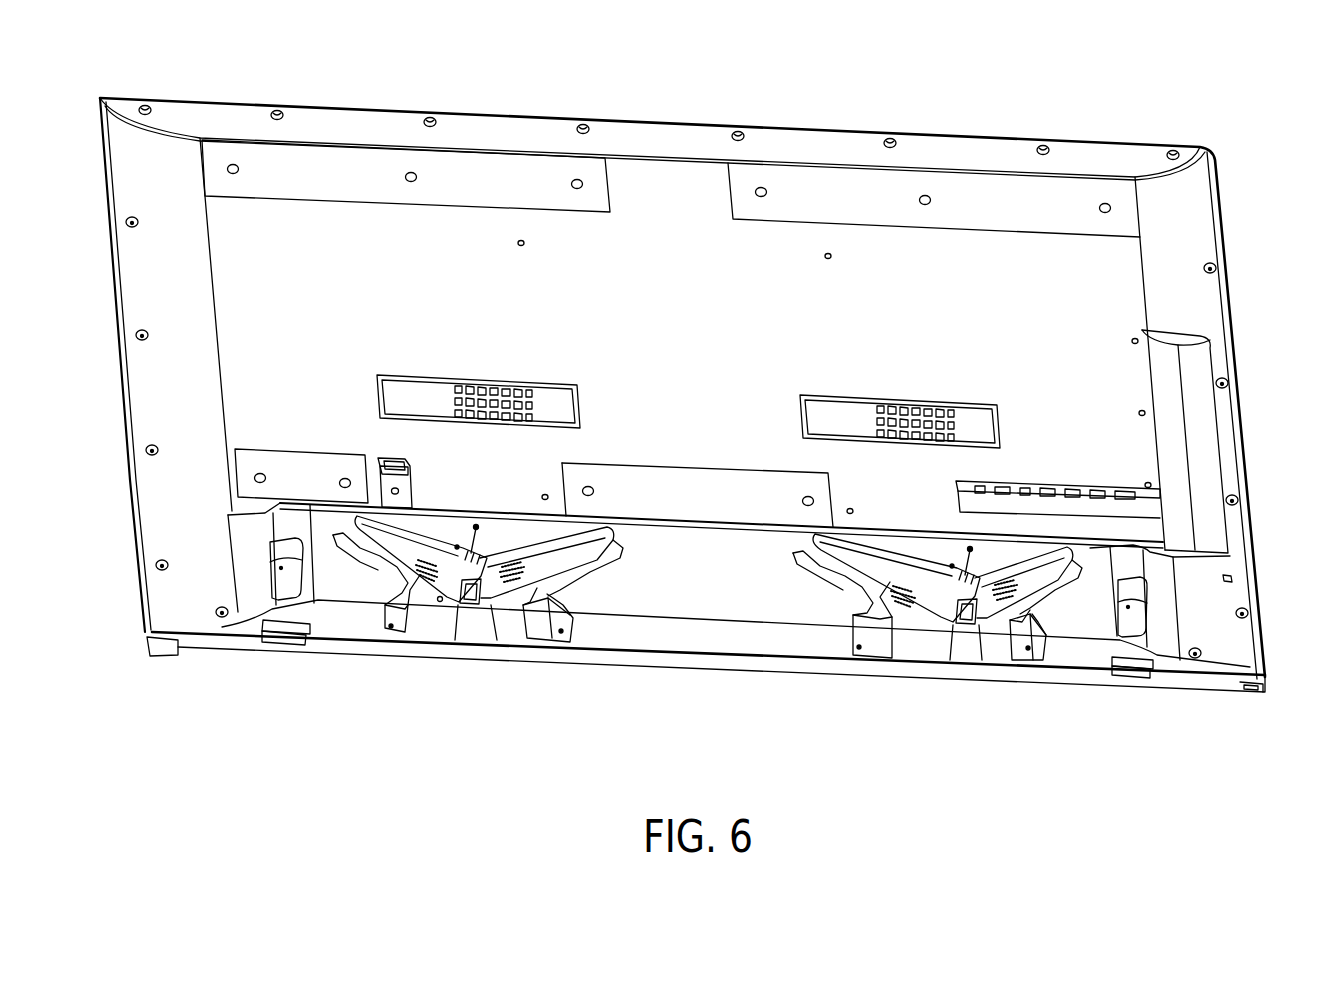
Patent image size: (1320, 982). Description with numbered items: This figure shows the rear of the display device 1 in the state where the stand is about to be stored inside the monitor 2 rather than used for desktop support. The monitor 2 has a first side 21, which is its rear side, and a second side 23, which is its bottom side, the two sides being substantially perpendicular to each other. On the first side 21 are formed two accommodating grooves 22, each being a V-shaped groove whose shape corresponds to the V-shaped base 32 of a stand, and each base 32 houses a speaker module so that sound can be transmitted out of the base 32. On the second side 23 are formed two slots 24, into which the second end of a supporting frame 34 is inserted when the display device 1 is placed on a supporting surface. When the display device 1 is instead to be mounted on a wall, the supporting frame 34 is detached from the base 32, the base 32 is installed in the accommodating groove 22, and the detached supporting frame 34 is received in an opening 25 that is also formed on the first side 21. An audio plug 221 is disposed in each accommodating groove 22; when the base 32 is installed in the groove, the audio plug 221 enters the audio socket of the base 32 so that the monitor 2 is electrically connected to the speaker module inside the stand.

The display device 1 is at (1158, 118).
The monitor 2 is at (1232, 226).
The first side 21 is at (1130, 301).
The accommodating groove 22 is at (503, 628).
The audio plug 221 is at (440, 604).
The second side 23 is at (728, 652).
The slot 24 is at (284, 645).
The opening 25 is at (550, 384).
The base 32 is at (614, 538).
The supporting frame 34 is at (566, 407).